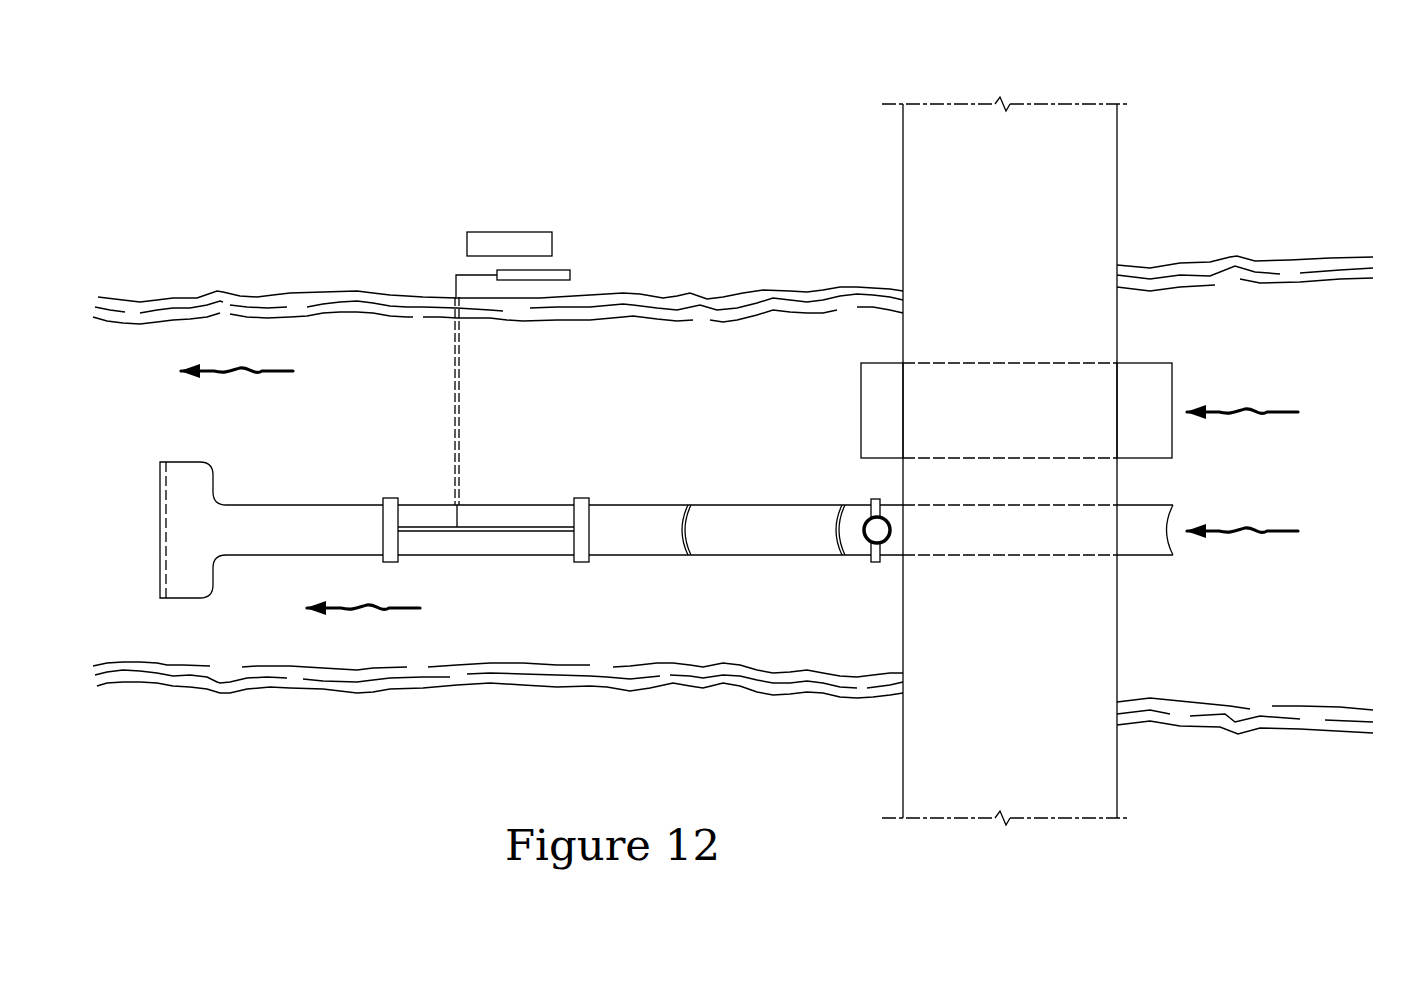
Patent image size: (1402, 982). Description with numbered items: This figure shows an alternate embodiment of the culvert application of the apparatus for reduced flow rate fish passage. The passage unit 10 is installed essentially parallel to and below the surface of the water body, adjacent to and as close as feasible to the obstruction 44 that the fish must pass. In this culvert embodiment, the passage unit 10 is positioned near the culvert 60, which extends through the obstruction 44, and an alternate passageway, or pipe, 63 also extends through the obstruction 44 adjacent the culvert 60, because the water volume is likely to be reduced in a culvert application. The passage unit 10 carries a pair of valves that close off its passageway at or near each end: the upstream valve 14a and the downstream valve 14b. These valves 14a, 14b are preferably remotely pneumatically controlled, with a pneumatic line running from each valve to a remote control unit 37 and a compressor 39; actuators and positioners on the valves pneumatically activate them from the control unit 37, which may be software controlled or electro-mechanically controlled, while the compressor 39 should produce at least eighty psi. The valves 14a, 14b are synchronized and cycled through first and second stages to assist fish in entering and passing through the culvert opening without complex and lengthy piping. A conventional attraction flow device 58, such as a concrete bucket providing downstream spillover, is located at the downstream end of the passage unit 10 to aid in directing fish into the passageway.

The passage unit 10 is at (509, 487).
The upstream valve 14a is at (576, 497).
The downstream valve 14b is at (390, 503).
The remote control unit 37 is at (495, 243).
The compressor 39 is at (562, 273).
The obstruction 44 is at (935, 240).
The attraction flow device 58 is at (182, 476).
The culvert 60 is at (876, 395).
The alternate passageway 63 is at (805, 510).